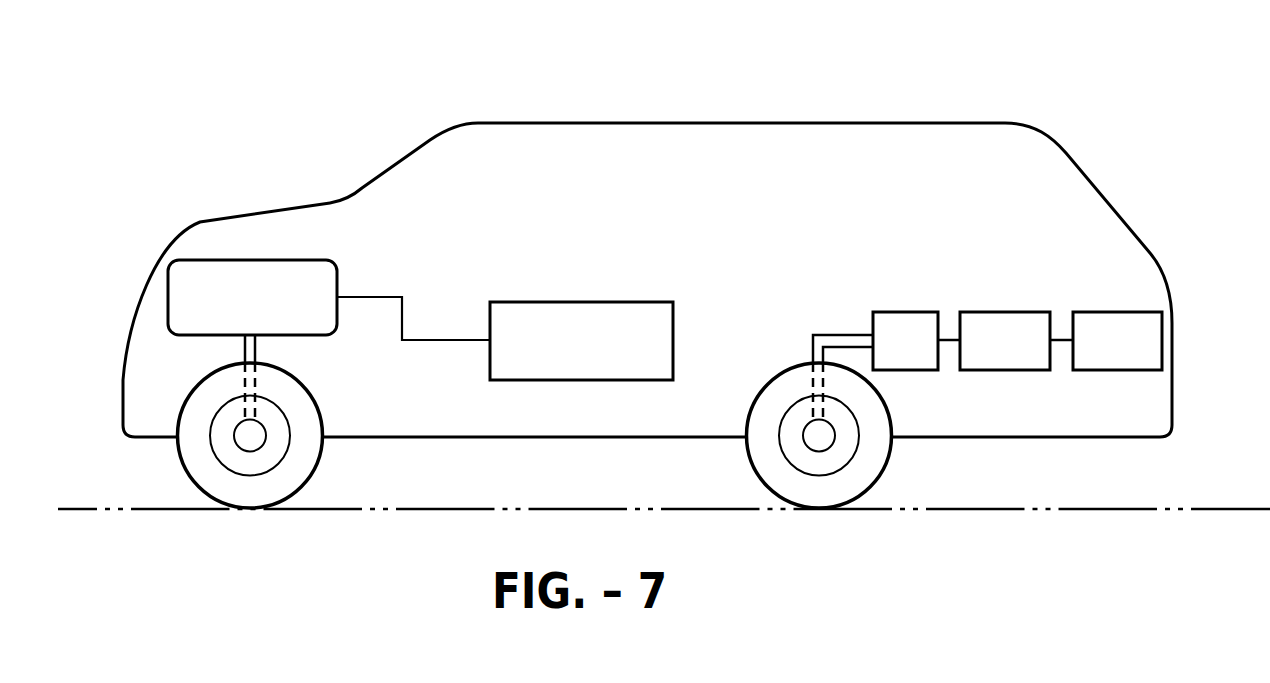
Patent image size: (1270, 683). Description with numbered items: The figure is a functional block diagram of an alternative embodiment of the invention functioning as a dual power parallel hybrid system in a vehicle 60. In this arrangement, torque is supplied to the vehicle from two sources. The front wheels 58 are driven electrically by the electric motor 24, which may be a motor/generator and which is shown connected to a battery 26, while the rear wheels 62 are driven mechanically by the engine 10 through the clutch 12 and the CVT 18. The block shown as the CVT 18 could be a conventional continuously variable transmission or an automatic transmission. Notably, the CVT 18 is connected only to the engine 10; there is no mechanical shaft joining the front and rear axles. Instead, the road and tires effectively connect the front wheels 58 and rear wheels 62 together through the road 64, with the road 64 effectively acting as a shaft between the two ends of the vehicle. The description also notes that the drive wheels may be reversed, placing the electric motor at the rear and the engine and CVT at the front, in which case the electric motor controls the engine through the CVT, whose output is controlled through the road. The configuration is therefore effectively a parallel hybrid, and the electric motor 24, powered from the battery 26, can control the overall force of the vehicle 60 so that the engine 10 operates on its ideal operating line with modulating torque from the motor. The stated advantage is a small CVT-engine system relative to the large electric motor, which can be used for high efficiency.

The vehicle 60 is at (528, 123).
The electric motor 24 is at (217, 260).
The battery 26 is at (602, 380).
The CVT 18 is at (893, 312).
The clutch 12 is at (978, 312).
The engine 10 is at (1123, 312).
The front wheels 58 is at (258, 492).
The rear wheels 62 is at (822, 497).
The road 64 is at (1237, 513).